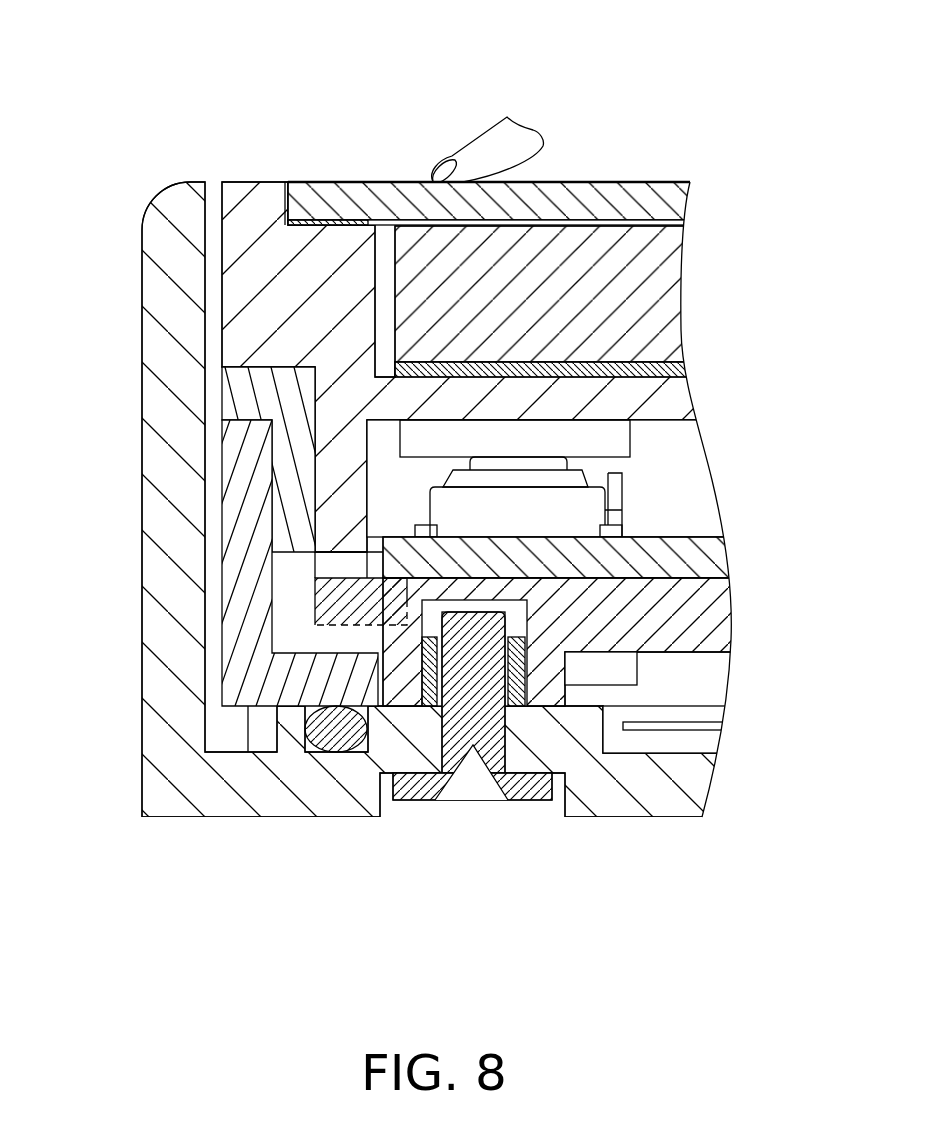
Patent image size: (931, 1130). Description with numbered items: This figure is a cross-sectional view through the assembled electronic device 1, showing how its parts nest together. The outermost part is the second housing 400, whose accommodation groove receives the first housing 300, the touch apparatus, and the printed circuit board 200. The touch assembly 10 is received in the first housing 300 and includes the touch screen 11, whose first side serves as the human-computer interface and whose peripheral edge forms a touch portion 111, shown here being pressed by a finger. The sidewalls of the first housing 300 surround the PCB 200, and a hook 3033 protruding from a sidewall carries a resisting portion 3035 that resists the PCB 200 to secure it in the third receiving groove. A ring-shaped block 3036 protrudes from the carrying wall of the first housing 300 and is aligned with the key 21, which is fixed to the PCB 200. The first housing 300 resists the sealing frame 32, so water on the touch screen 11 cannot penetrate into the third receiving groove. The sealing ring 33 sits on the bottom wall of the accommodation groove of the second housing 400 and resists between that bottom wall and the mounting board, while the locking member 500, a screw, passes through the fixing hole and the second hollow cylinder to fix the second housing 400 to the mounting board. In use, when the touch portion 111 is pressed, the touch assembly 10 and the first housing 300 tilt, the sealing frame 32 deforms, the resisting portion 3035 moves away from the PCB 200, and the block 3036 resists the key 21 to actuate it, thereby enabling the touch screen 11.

The electronic device 1 is at (429, 451).
The touch assembly 10 is at (640, 286).
The touch screen 11 is at (663, 208).
The touch portion 111 is at (585, 182).
The first housing 300 is at (262, 223).
The hook 3033 is at (287, 478).
The resisting portion 3035 is at (405, 605).
The block 3036 is at (625, 437).
The key 21 is at (525, 463).
The printed circuit board 200 is at (700, 562).
The sealing frame 32 is at (242, 533).
The sealing ring 33 is at (328, 737).
The second housing 400 is at (165, 353).
The locking member 500 is at (457, 738).